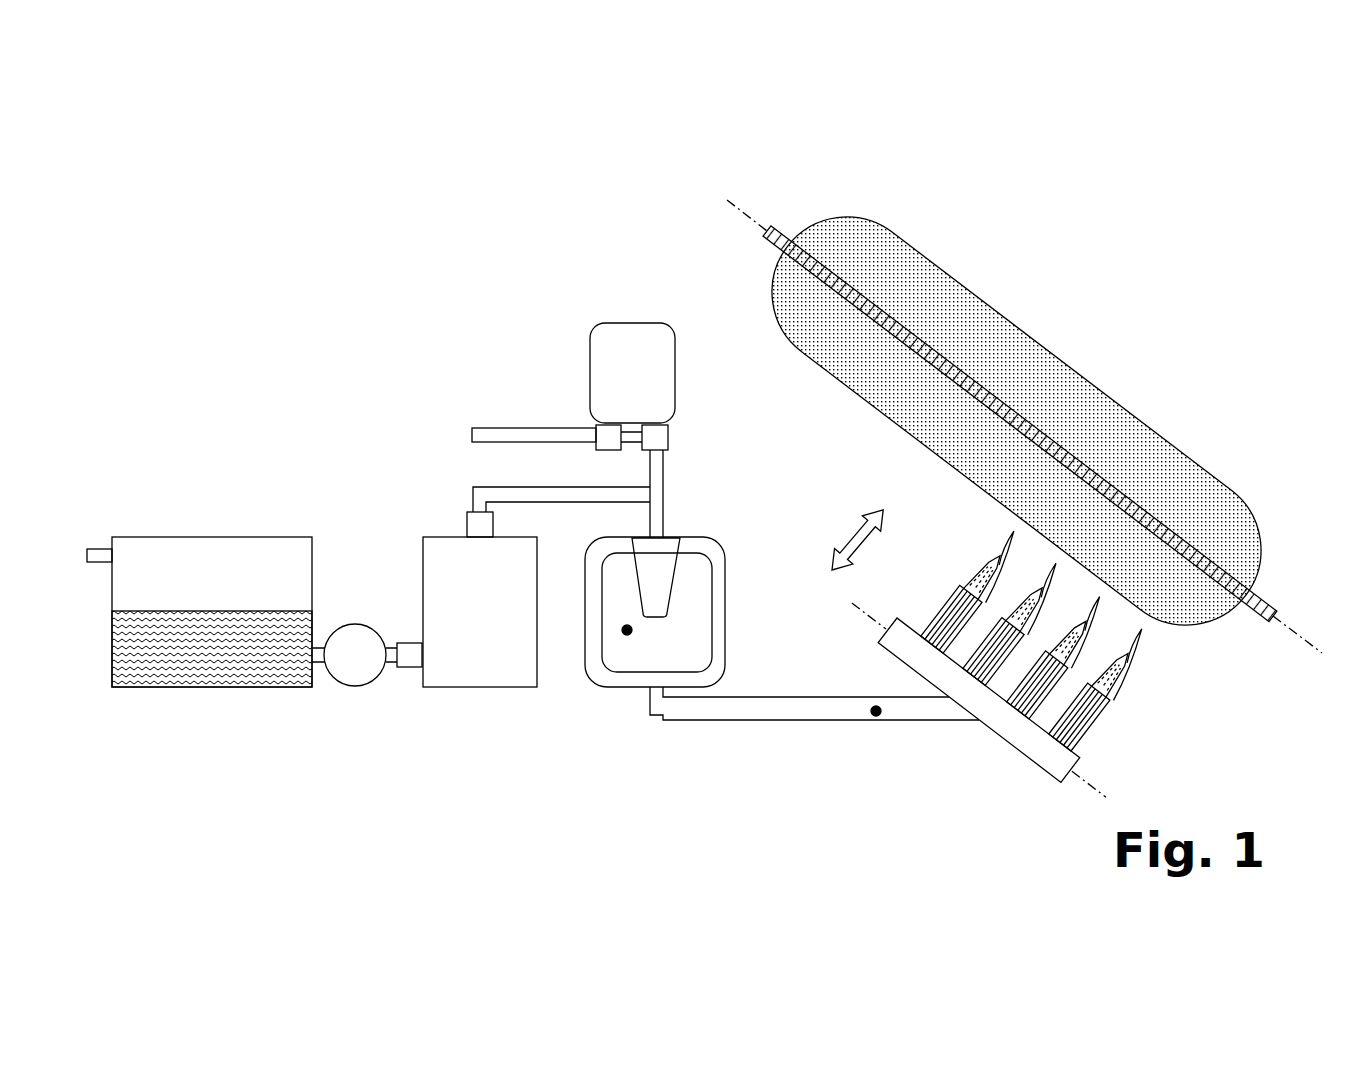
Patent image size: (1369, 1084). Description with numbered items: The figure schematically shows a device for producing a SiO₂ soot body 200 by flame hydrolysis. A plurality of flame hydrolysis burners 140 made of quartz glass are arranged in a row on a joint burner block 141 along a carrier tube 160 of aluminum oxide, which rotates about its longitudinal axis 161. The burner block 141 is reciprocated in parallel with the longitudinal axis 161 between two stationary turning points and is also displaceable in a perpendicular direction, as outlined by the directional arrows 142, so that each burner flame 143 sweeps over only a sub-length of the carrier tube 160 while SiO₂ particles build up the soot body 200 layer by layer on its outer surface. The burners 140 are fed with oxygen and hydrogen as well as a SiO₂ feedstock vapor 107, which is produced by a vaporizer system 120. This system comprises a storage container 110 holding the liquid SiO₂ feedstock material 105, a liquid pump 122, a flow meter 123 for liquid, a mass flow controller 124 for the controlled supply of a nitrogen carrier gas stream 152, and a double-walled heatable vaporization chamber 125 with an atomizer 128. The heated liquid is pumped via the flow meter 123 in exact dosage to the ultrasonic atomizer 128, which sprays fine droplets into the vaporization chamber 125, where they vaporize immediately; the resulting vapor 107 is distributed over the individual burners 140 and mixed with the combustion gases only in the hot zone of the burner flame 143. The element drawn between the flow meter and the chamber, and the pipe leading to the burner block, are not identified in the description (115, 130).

The liquid SiO₂ feedstock material 105 is at (218, 637).
The SiO₂ feedstock vapor 107 is at (876, 711).
The storage container 110 is at (212, 536).
The heater unit 115 is at (478, 687).
The vaporizer system 120 is at (737, 610).
The liquid pump 122 is at (348, 677).
The flow meter 123 is at (412, 670).
The mass flow controller 124 is at (632, 322).
The vaporization chamber 125 is at (627, 630).
The atomizer 128 is at (652, 563).
The supply pipe 130 is at (740, 712).
The flame hydrolysis burners 140 is at (1090, 717).
The burner block 141 is at (1007, 728).
The directional arrows 142 is at (850, 535).
The burner flame 143 is at (1148, 647).
The carrier gas stream 152 is at (517, 433).
The carrier tube 160 is at (785, 237).
The longitudinal axis 161 is at (742, 208).
The SiO₂ soot body 200 is at (983, 312).